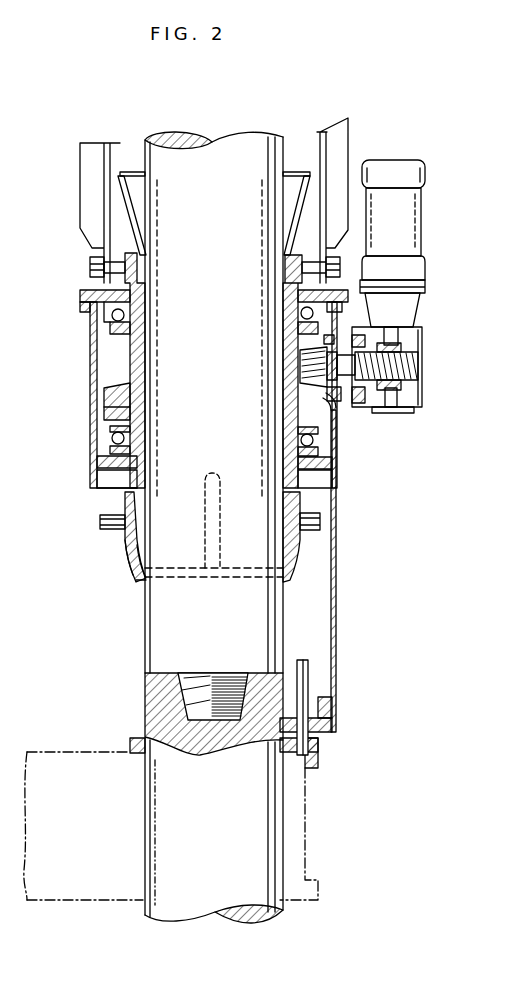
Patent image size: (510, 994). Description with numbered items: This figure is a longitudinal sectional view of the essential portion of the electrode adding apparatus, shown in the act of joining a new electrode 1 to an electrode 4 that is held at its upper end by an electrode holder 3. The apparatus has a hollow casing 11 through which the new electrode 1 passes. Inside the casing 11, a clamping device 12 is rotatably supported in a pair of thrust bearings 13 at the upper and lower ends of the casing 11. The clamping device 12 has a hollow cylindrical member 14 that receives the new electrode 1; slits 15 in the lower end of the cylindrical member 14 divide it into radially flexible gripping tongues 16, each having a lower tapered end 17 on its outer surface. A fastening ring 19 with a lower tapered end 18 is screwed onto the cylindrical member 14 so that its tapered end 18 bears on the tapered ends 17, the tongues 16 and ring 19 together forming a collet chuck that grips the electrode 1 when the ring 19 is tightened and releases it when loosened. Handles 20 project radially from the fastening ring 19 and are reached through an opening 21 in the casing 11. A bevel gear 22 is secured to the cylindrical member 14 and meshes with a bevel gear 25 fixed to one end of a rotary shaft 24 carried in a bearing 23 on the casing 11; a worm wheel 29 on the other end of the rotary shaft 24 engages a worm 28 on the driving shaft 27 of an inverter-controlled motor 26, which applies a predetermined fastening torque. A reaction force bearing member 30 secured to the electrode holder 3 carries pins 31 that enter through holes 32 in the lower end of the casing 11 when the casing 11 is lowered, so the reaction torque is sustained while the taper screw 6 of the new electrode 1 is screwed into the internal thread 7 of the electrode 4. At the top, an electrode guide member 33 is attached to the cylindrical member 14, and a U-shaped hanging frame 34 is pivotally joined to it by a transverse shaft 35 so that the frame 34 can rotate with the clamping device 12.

The new electrode 1 is at (218, 155).
The electrode holder 3 is at (48, 900).
The electrode 4 is at (222, 905).
The taper screw 6 is at (182, 679).
The internal thread 7 is at (186, 708).
The casing 11 is at (337, 571).
The clamping device 12 is at (130, 474).
The thrust bearings 13 is at (110, 316).
The hollow cylindrical member 14 is at (141, 437).
The slits 15 is at (224, 500).
The gripping tongues 16 is at (139, 522).
The lower tapered end 17 is at (136, 568).
The tapered end 18 is at (138, 583).
The fastening ring 19 is at (126, 548).
The handles 20 is at (100, 523).
The opening 21 is at (100, 497).
The bevel gear 22 is at (108, 383).
The bearing 23 is at (312, 380).
The rotary shaft 24 is at (362, 398).
The bevel gear 25 is at (322, 386).
The motor 26 is at (412, 236).
The driving shaft 27 is at (397, 338).
The worm 28 is at (421, 349).
The worm wheel 29 is at (421, 378).
The reaction force bearing member 30 is at (318, 760).
The pins 31 is at (310, 676).
The through holes 32 is at (322, 699).
The electrode guide member 33 is at (122, 200).
The hanging frame 34 is at (103, 160).
The transverse shaft 35 is at (90, 264).